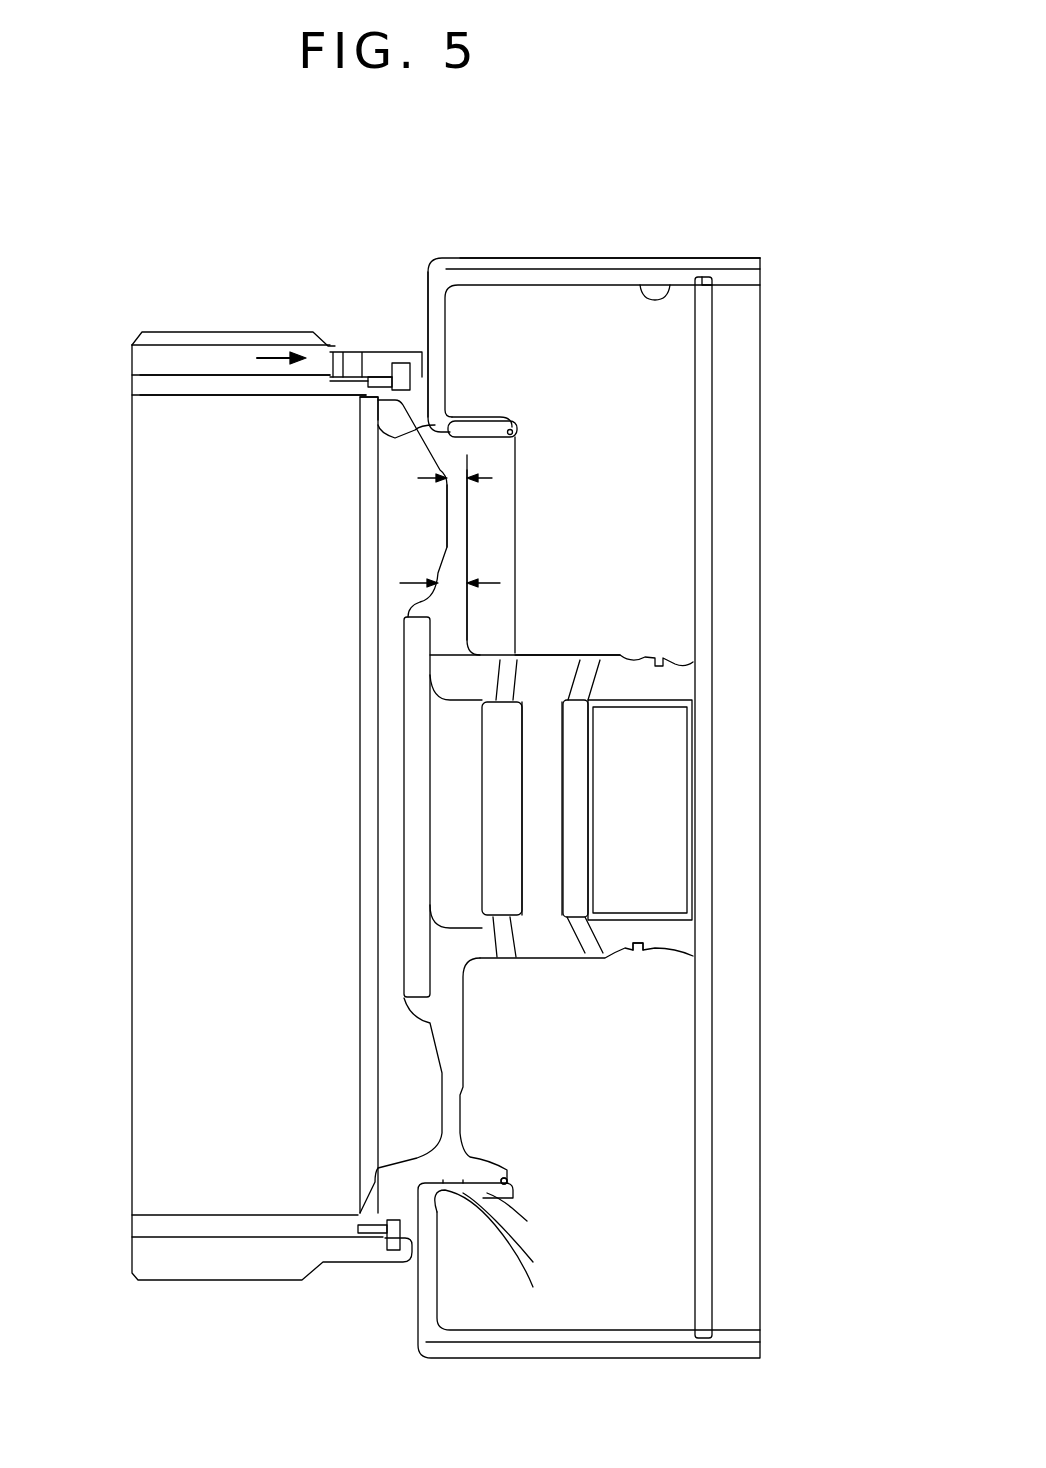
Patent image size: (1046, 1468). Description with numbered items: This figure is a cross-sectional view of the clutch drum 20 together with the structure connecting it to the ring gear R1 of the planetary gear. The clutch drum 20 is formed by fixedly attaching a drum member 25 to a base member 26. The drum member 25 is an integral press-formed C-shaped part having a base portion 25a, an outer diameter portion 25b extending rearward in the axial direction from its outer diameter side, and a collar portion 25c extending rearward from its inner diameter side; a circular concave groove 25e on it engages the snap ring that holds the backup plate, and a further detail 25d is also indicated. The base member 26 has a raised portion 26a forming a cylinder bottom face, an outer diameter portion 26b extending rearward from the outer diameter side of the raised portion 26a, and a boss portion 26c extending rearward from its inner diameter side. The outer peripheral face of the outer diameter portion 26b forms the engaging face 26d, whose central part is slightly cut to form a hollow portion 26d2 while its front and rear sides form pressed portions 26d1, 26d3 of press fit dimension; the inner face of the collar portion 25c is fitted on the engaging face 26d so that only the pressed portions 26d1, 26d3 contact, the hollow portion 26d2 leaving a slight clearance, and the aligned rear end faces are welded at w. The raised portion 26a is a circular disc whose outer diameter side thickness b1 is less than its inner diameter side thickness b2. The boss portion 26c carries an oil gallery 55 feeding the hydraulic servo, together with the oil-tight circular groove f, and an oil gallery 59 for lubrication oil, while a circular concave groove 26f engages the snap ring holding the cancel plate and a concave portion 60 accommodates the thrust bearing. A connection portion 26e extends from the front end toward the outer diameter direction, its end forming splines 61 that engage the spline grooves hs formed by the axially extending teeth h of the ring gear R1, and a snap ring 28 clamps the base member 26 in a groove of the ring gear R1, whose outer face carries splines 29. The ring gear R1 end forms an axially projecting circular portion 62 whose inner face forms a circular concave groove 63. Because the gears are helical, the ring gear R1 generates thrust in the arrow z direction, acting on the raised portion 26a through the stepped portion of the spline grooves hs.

The clutch drum 20 is at (542, 175).
The drum member 25 is at (602, 236).
The base portion 25a is at (445, 338).
The outer diameter portion 25b is at (640, 262).
The collar portion 25c is at (500, 415).
The hole 25d is at (665, 292).
The circular concave groove 25e is at (712, 285).
The base member 26 is at (555, 515).
The raised portion 26a is at (468, 558).
The outer diameter portion 26b is at (517, 435).
The boss portion 26c is at (562, 664).
The engaging face 26d is at (447, 424).
The pressed portion 26d1 is at (519, 1256).
The hollow portion 26d2 is at (533, 1239).
The pressed portion 26d3 is at (545, 1220).
The connection portion 26e is at (372, 402).
The circular concave groove 26f is at (638, 952).
The snap ring 28 is at (400, 372).
The splines 29 is at (180, 341).
The oil gallery 55 is at (507, 942).
The oil gallery 59 is at (594, 955).
The concave portion 60 is at (427, 655).
The splines 61 is at (384, 377).
The circular portion 62 is at (396, 362).
The circular concave groove 63 is at (385, 1240).
The ring gear R1 is at (135, 312).
The teeth h is at (193, 382).
The spline grooves hs is at (328, 350).
The arrow z direction z is at (271, 358).
The outer diameter side thickness b1 is at (438, 479).
The inner diameter side thickness b2 is at (450, 584).
The oil-tight circular groove f is at (512, 748).
The welded end faces w is at (517, 1183).